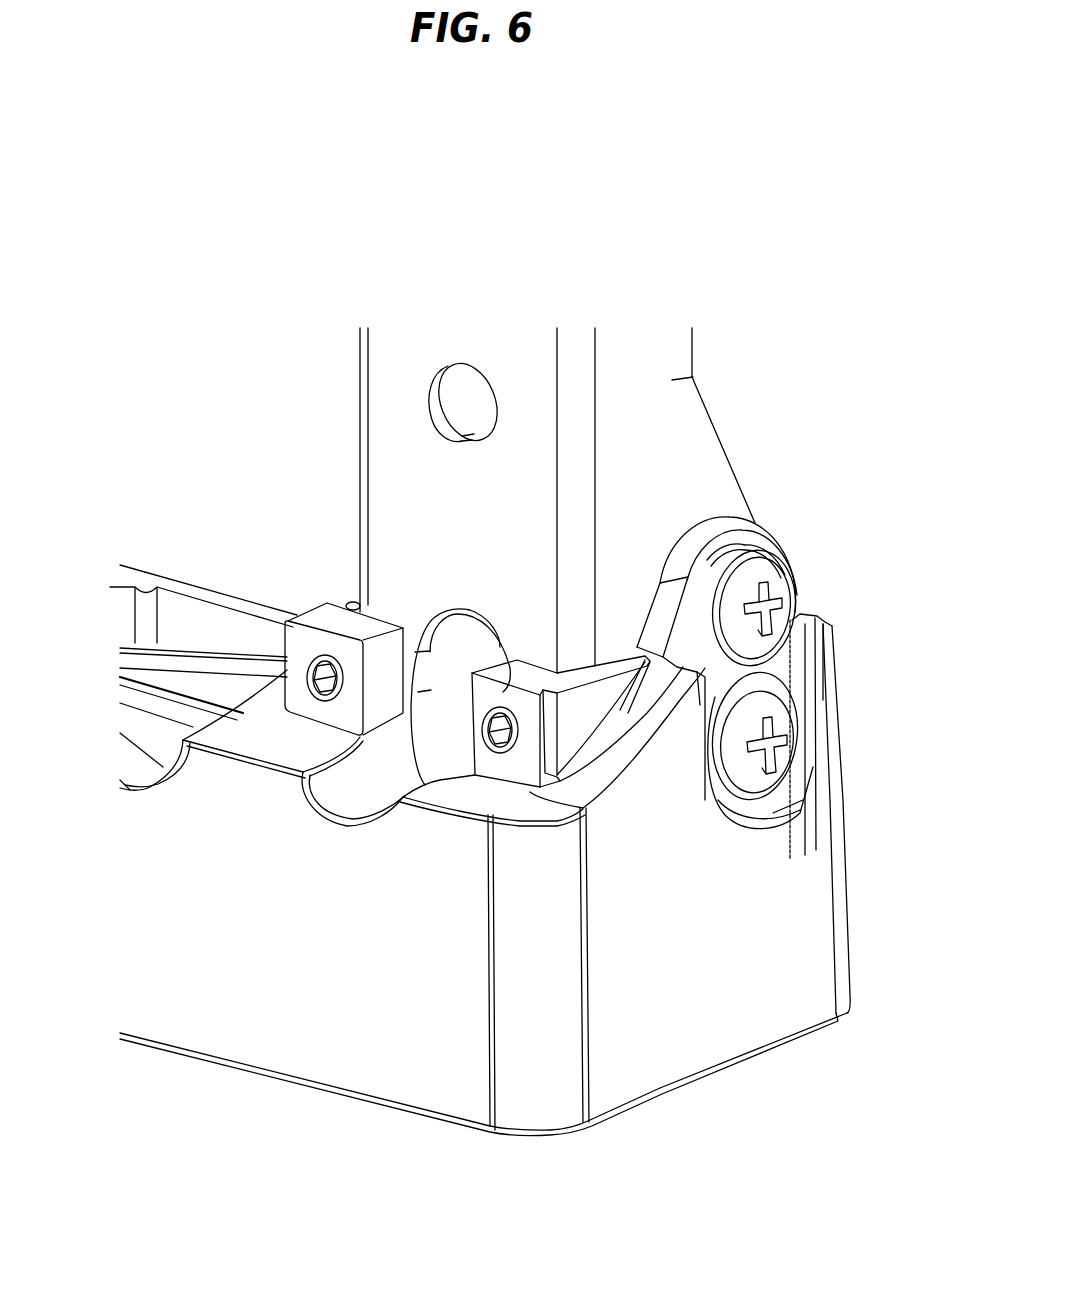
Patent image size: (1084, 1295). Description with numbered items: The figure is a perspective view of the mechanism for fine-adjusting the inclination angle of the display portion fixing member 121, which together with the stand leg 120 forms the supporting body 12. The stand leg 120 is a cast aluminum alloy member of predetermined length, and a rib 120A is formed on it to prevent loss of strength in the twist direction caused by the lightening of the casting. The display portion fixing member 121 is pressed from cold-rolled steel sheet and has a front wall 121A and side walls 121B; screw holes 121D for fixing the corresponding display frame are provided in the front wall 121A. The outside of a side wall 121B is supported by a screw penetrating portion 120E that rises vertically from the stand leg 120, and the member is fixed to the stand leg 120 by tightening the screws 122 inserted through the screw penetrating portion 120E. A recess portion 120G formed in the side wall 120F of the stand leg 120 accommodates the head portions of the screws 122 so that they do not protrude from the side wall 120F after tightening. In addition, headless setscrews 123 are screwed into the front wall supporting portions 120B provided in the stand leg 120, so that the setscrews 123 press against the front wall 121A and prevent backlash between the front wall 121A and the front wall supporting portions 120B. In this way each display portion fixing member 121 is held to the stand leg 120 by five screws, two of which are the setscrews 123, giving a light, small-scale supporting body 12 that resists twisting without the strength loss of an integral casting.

The supporting body 12 is at (571, 272).
The display portion fixing member 121 is at (414, 330).
The front wall 121A is at (373, 362).
The side wall 121B is at (693, 377).
The screw hole 121D is at (437, 400).
The stand leg 120 is at (152, 1008).
The rib 120A is at (128, 640).
The front wall supporting portion 120B is at (363, 608).
The screw penetrating portion 120E is at (717, 520).
The side wall 120F is at (757, 997).
The recess portion 120G is at (773, 813).
The screw 122 is at (783, 578).
The setscrew 123 is at (307, 677).